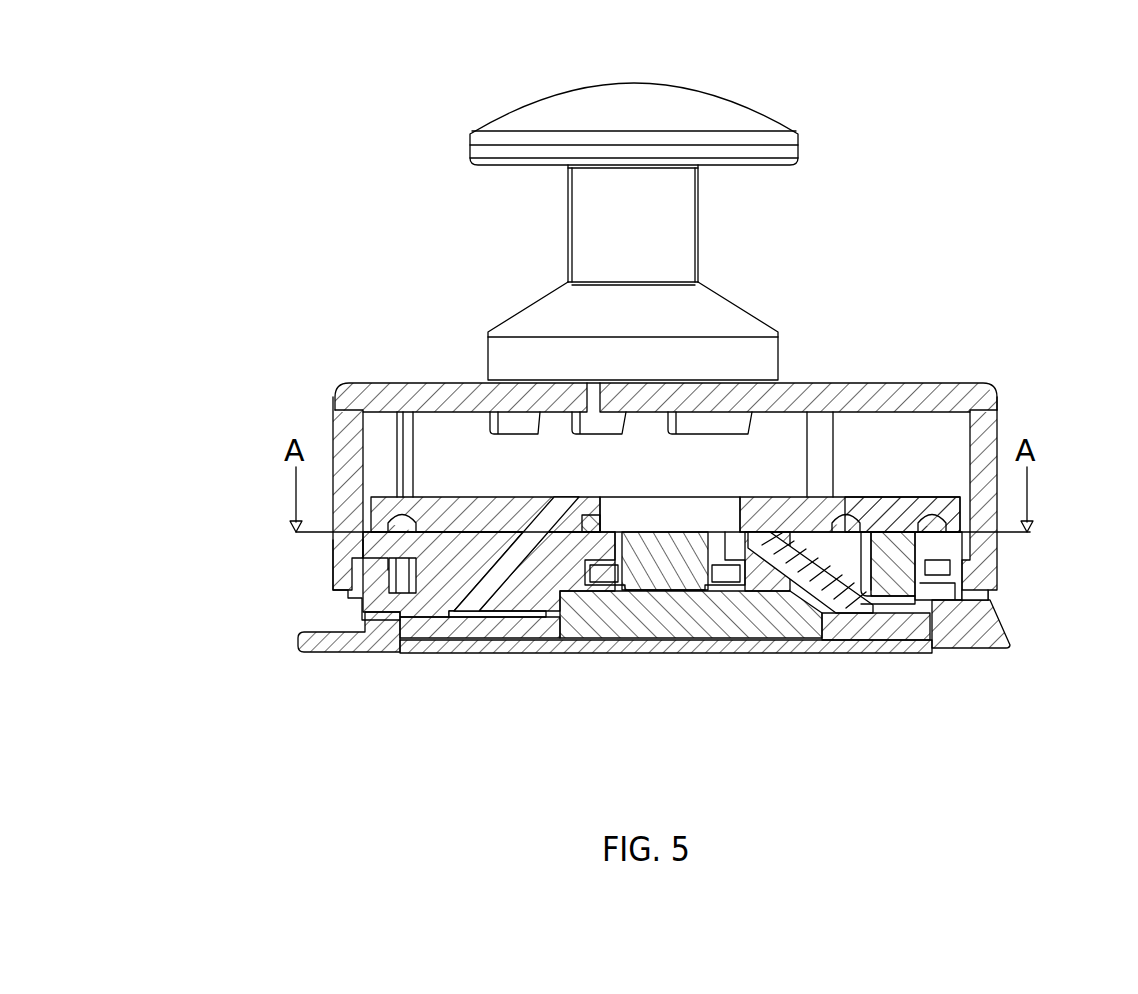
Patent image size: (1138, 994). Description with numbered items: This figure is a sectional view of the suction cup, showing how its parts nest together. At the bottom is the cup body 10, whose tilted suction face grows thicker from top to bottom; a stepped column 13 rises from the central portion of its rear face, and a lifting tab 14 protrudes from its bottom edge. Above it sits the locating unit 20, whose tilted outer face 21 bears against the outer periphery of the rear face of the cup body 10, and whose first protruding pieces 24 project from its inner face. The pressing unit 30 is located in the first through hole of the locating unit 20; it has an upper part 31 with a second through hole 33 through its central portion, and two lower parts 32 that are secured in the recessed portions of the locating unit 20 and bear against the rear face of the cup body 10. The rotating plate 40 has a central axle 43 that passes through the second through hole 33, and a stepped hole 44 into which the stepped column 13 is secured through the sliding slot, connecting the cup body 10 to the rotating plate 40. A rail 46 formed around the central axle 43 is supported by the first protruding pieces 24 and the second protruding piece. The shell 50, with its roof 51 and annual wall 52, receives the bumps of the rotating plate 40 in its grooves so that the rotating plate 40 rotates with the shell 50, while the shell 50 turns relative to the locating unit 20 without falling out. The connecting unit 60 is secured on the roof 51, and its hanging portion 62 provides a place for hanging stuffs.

The cup body 10 is at (386, 660).
The stepped column 13 is at (662, 528).
The lifting tab 14 is at (298, 640).
The locating unit 20 is at (1021, 615).
The outer face 21 is at (978, 603).
The first protruding pieces 24 is at (402, 516).
The pressing unit 30 is at (497, 542).
The upper part 31 is at (548, 522).
The lower parts 32 is at (444, 620).
The second through hole 33 is at (600, 512).
The rotating plate 40 is at (864, 490).
The central axle 43 is at (738, 531).
The stepped hole 44 is at (683, 520).
The rail 46 is at (566, 606).
The shell 50 is at (618, 458).
The roof 51 is at (914, 383).
The annual wall 52 is at (333, 548).
The connecting unit 60 is at (621, 202).
The hanging portion 62 is at (518, 118).